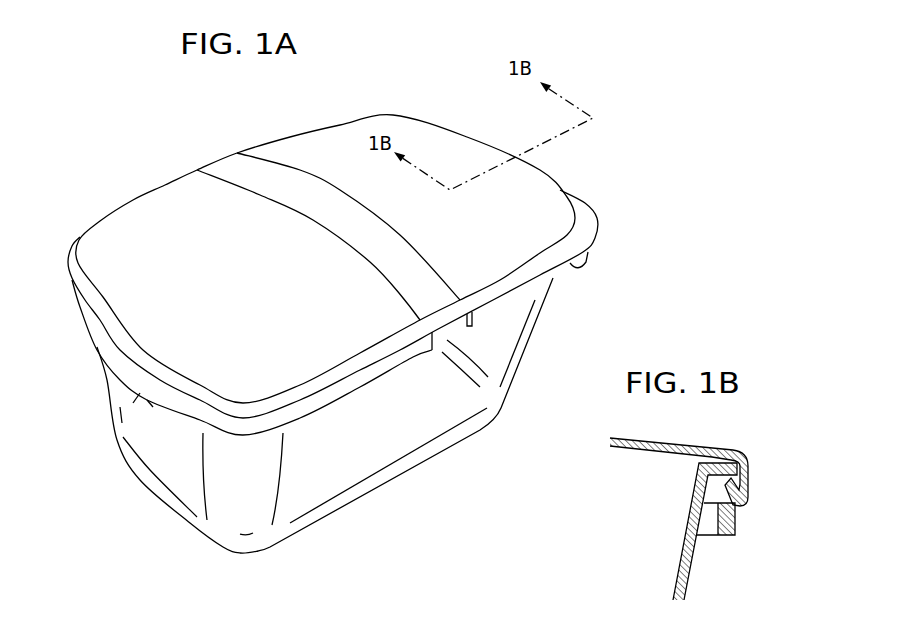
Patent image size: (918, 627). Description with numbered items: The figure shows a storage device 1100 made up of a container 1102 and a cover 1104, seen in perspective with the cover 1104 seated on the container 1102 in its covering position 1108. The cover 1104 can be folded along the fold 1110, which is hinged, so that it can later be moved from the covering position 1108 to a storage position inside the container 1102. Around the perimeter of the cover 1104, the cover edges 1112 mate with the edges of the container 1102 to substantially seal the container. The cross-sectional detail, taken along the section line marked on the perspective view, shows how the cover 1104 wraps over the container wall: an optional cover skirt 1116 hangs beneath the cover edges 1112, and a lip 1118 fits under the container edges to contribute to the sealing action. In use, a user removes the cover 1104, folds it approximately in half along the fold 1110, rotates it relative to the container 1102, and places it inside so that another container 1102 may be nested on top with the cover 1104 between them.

In FIG. 1A, the storage device 1100 is at (190, 132).
In FIG. 1A, the container 1102 is at (158, 500).
In FIG. 1B, the container 1102 is at (678, 573).
In FIG. 1A, the cover 1104 is at (550, 173).
In FIG. 1B, the cover 1104 is at (643, 447).
In FIG. 1A, the covering position 1108 is at (430, 142).
In FIG. 1A, the fold 1110 is at (90, 320).
In FIG. 1A, the cover edges 1112 is at (586, 262).
In FIG. 1A, the cover skirt 1116 is at (556, 272).
In FIG. 1B, the cover skirt 1116 is at (740, 523).
In FIG. 1B, the lip 1118 is at (743, 513).